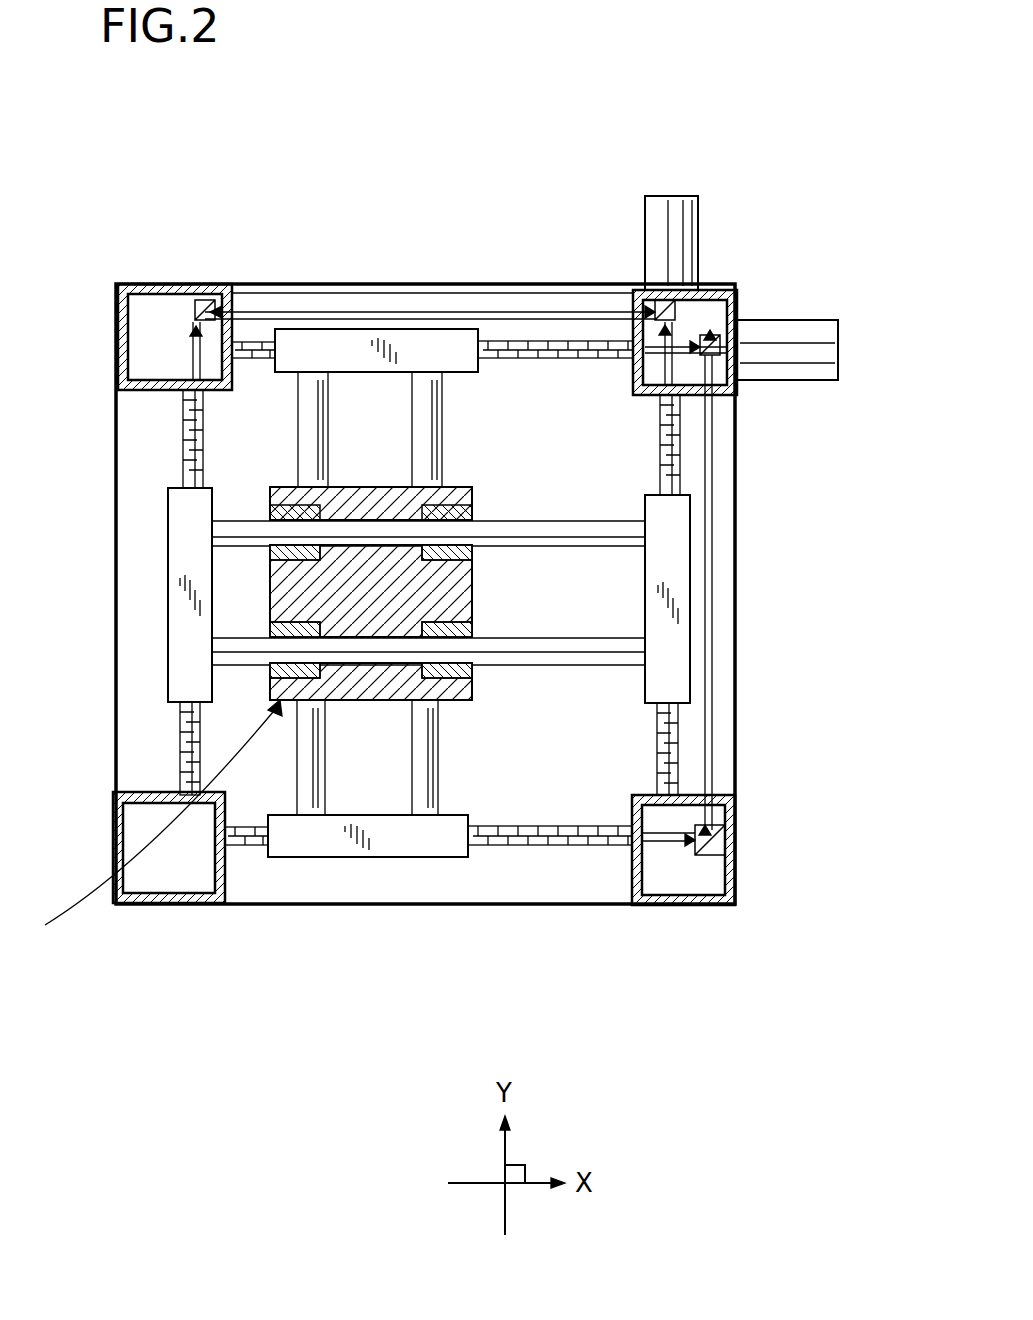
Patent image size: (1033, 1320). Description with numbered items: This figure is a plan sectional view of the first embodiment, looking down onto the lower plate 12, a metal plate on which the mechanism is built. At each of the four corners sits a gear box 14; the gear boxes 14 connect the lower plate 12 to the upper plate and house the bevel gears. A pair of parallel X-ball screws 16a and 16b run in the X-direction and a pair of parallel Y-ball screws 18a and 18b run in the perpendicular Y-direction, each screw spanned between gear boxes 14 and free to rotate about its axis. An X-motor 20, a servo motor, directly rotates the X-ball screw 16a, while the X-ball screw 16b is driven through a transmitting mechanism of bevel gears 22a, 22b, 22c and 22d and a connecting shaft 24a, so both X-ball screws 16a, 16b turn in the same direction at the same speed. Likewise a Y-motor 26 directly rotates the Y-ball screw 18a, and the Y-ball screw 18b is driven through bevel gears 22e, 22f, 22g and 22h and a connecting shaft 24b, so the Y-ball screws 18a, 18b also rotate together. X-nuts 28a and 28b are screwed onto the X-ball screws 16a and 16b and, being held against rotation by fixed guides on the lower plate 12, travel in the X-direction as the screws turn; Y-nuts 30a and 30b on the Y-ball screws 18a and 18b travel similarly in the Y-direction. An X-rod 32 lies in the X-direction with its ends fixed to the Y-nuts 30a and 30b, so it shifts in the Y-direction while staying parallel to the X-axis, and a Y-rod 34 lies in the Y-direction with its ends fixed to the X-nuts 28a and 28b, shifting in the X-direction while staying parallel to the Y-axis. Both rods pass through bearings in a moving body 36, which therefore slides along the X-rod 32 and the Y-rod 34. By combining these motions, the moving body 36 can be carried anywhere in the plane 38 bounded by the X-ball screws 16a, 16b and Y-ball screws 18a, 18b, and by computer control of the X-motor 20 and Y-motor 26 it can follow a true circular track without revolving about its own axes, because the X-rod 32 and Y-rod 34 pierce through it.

The lower plate 12 is at (405, 885).
The gear boxes 14 is at (155, 390).
The X-ball screw 16a is at (487, 340).
The X-ball screw 16b is at (570, 850).
The Y-ball screw 18a is at (680, 722).
The Y-ball screw 18b is at (180, 730).
The X-motor 20 is at (790, 333).
The bevel gear 22a is at (745, 290).
The bevel gear 22b is at (693, 400).
The bevel gear 22c is at (700, 808).
The bevel gear 22d is at (695, 850).
The bevel gear 22e is at (705, 290).
The bevel gear 22f is at (640, 300).
The bevel gear 22g is at (220, 298).
The bevel gear 22h is at (158, 284).
The connecting shaft 24a is at (712, 580).
The connecting shaft 24b is at (318, 300).
The Y-motor 26 is at (672, 196).
The X-nut 28a is at (405, 340).
The X-nut 28b is at (310, 840).
The Y-nut 30a is at (680, 525).
The Y-nut 30b is at (185, 548).
The X-rod 32 is at (515, 530).
The Y-rod 34 is at (305, 458).
The moving body 36 is at (153, 825).
The plane 38 is at (500, 900).